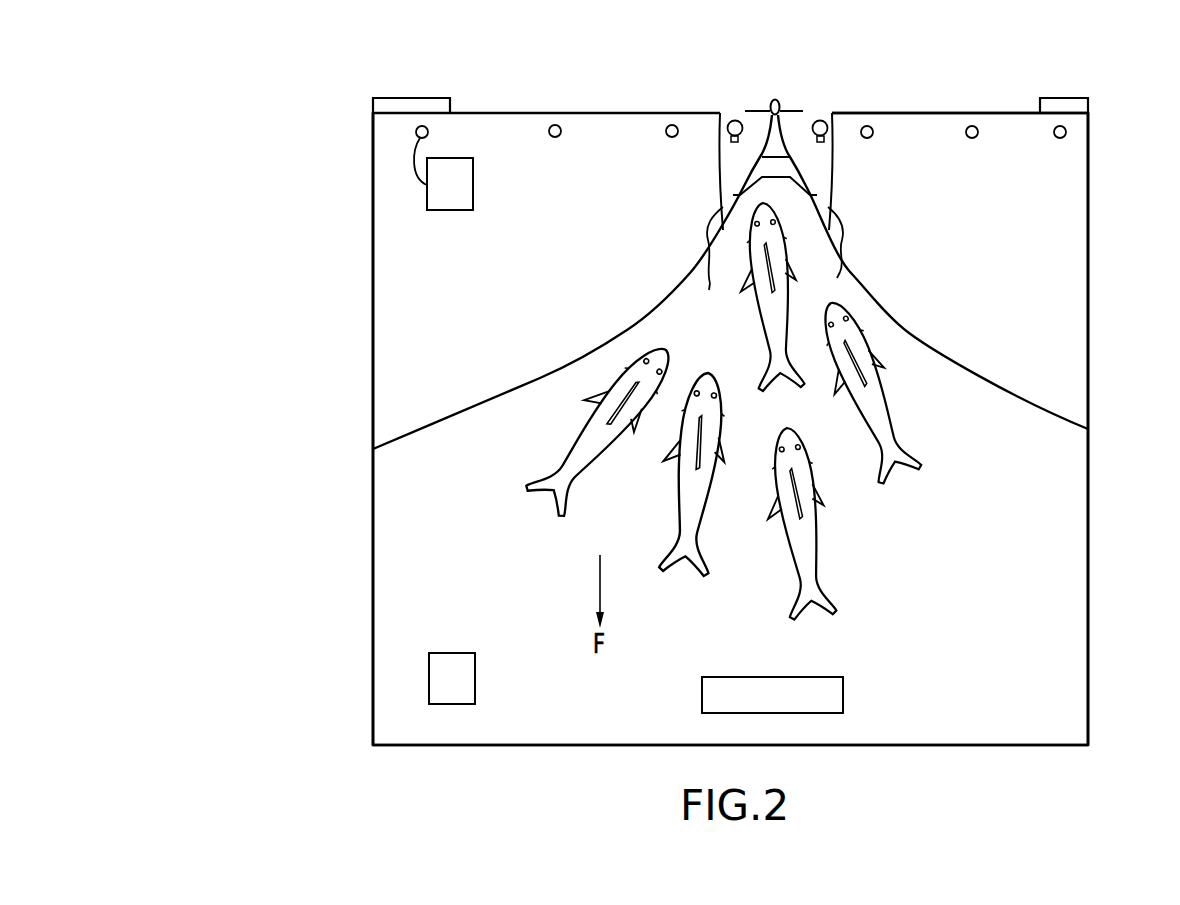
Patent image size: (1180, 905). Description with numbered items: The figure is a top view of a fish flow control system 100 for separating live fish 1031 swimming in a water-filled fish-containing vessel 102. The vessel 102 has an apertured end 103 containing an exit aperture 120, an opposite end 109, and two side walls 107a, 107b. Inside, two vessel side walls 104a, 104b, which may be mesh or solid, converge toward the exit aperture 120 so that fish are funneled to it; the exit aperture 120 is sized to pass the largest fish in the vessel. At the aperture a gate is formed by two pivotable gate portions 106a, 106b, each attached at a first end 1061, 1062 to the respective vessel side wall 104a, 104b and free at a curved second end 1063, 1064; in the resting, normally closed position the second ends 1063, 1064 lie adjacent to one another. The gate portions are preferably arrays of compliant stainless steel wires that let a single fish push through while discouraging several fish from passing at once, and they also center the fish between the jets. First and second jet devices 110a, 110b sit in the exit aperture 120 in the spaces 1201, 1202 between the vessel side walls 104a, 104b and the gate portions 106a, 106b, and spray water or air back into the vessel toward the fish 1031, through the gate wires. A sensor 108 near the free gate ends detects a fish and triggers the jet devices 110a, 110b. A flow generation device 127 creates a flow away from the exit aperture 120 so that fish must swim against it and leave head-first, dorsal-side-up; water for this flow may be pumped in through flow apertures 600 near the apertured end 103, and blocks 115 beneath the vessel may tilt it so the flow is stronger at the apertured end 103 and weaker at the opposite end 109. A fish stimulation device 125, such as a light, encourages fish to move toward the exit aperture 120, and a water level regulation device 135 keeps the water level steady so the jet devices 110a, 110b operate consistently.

The fish flow control system 100 is at (333, 188).
The fish-containing vessel 102 is at (1017, 595).
The apertured end 103 is at (955, 113).
The first vessel side wall 104a is at (925, 335).
The second vessel side wall 104b is at (540, 378).
The first pivotable gate portion 106a is at (812, 197).
The second pivotable gate portion 106b is at (740, 195).
The side wall 107a is at (1088, 283).
The side wall 107b is at (373, 285).
The sensor 108 is at (778, 98).
The opposite end 109 is at (941, 745).
The first jet device 110a is at (827, 134).
The second jet device 110b is at (728, 134).
The blocks 115 is at (410, 100).
The exit aperture 120 is at (720, 100).
The fish stimulation device 125 is at (447, 672).
The flow generation device 127 is at (466, 195).
The water level regulation device 135 is at (788, 710).
The flow apertures 600 is at (553, 138).
The fish 1031 is at (890, 385).
The first end of first gate portion 1061 is at (837, 283).
The first end of second gate portion 1062 is at (707, 299).
The second end of first gate portion 1063 is at (803, 111).
The second end of second gate portion 1064 is at (745, 111).
The space 1201 is at (832, 228).
The space 1202 is at (706, 236).